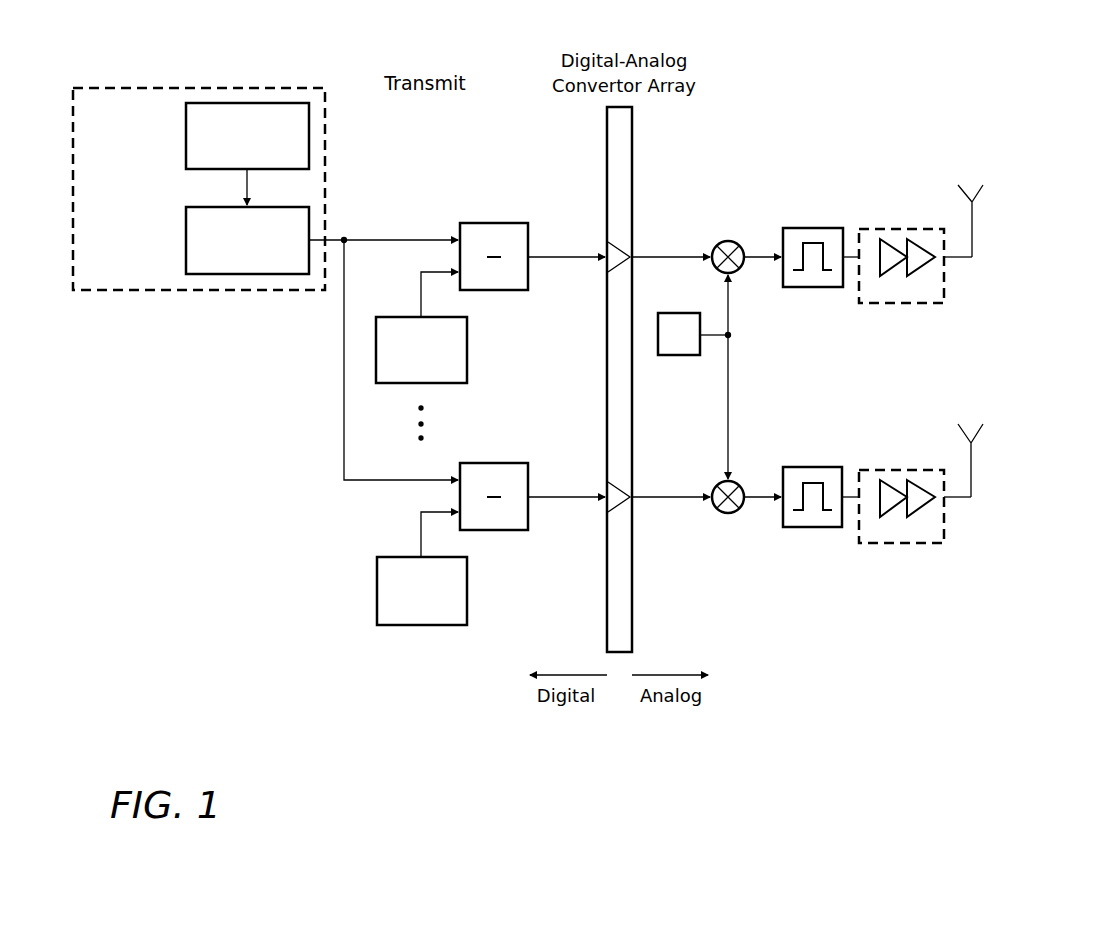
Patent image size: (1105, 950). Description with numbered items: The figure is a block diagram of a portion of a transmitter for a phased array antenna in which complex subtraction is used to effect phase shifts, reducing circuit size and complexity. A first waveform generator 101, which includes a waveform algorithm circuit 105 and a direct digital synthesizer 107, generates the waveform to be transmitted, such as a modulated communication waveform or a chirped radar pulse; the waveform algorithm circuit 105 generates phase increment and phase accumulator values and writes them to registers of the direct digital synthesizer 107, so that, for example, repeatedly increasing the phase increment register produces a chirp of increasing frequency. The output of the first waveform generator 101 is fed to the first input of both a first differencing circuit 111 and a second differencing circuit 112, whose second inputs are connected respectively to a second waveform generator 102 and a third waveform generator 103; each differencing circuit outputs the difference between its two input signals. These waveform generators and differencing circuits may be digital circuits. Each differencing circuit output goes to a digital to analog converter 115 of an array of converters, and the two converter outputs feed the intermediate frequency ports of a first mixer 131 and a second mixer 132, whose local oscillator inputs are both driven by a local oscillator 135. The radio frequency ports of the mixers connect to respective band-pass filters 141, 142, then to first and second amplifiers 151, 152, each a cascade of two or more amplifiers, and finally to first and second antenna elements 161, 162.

The first waveform generator 101 is at (245, 88).
The waveform algorithm circuit 105 is at (186, 145).
The direct digital synthesizer 107 is at (186, 240).
The first differencing circuit 111 is at (494, 223).
The second differencing circuit 112 is at (494, 463).
The second waveform generator 102 is at (467, 365).
The third waveform generator 103 is at (467, 605).
The digital to analog converter 115 is at (632, 157).
The first mixer 131 is at (729, 240).
The second mixer 132 is at (727, 514).
The local oscillator 135 is at (675, 357).
The filter 141 is at (800, 228).
The filter 142 is at (800, 467).
The first amplifier 151 is at (887, 229).
The second amplifier 152 is at (887, 468).
The first antenna element 161 is at (977, 190).
The second antenna element 162 is at (975, 430).